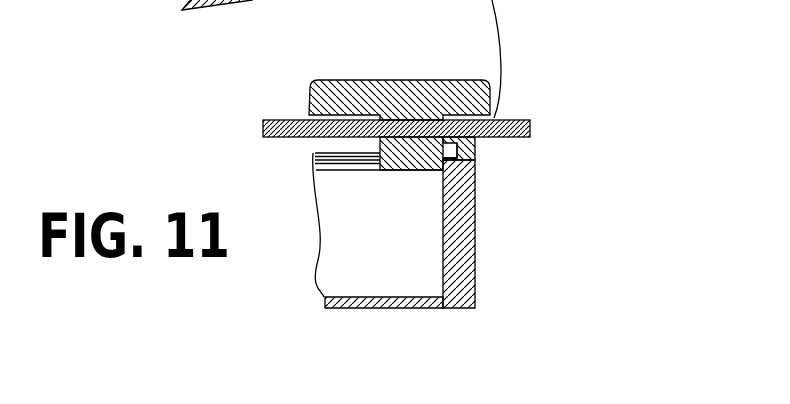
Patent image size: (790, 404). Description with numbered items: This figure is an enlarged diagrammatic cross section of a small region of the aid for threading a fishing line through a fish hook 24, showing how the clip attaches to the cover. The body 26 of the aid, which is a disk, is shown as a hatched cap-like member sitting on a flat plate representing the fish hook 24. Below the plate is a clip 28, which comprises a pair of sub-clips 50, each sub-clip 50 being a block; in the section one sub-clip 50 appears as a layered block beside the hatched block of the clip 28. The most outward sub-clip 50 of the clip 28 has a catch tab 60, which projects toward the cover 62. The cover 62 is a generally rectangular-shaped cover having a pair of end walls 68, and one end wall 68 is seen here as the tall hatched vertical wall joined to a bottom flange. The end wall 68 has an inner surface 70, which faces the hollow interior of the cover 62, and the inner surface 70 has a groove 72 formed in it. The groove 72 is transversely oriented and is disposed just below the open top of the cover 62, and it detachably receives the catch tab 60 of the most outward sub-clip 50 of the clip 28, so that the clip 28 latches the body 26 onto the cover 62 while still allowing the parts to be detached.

The body 26 is at (335, 80).
The fish hook 24 is at (532, 128).
The clip 28 is at (416, 173).
The sub-clip 50 is at (379, 153).
The catch tab 60 is at (450, 151).
The groove 72 is at (467, 142).
The end wall 68 is at (477, 231).
The inner surface 70 is at (443, 247).
The cover 62 is at (466, 261).